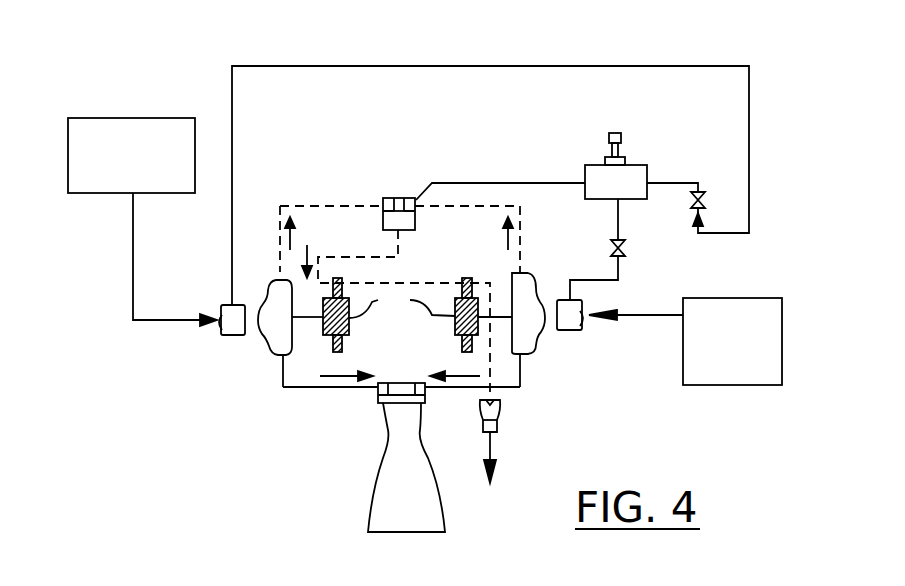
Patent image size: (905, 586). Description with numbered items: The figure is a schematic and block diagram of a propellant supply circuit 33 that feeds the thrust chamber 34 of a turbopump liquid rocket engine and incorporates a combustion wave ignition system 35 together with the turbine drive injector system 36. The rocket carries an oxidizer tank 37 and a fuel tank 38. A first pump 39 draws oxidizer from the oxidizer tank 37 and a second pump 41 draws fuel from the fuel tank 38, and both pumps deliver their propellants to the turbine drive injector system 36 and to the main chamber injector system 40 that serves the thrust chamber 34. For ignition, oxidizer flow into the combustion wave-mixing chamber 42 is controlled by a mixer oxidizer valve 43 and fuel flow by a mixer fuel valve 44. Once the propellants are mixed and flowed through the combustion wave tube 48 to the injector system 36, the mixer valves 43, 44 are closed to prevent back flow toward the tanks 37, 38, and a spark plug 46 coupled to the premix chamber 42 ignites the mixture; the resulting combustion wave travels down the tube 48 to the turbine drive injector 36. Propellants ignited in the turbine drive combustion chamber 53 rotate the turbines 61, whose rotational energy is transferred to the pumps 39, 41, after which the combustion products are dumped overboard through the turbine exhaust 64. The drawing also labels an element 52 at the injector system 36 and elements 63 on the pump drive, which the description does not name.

The propellant supply circuit 33 is at (690, 53).
The thrust chamber 34 is at (376, 465).
The combustion wave ignition system 35 is at (673, 157).
The turbine drive injector system 36 is at (398, 198).
The oxidizer tank 37 is at (84, 118).
The fuel tank 38 is at (772, 298).
The first pump 39 is at (268, 345).
The main chamber injector system 40 is at (403, 383).
The second pump 41 is at (535, 347).
The combustion wave-mixing chamber 42 is at (633, 199).
The mixer oxidizer valve 43 is at (697, 224).
The mixer fuel valve 44 is at (618, 258).
The spark plug 46 is at (622, 140).
The combustion wave tube 48 is at (524, 182).
The valve inlet port 52 is at (383, 216).
The turbine drive combustion chamber 53 is at (415, 220).
The turbines 61 is at (402, 303).
The gear 63 is at (306, 320).
The turbine exhaust 64 is at (502, 412).